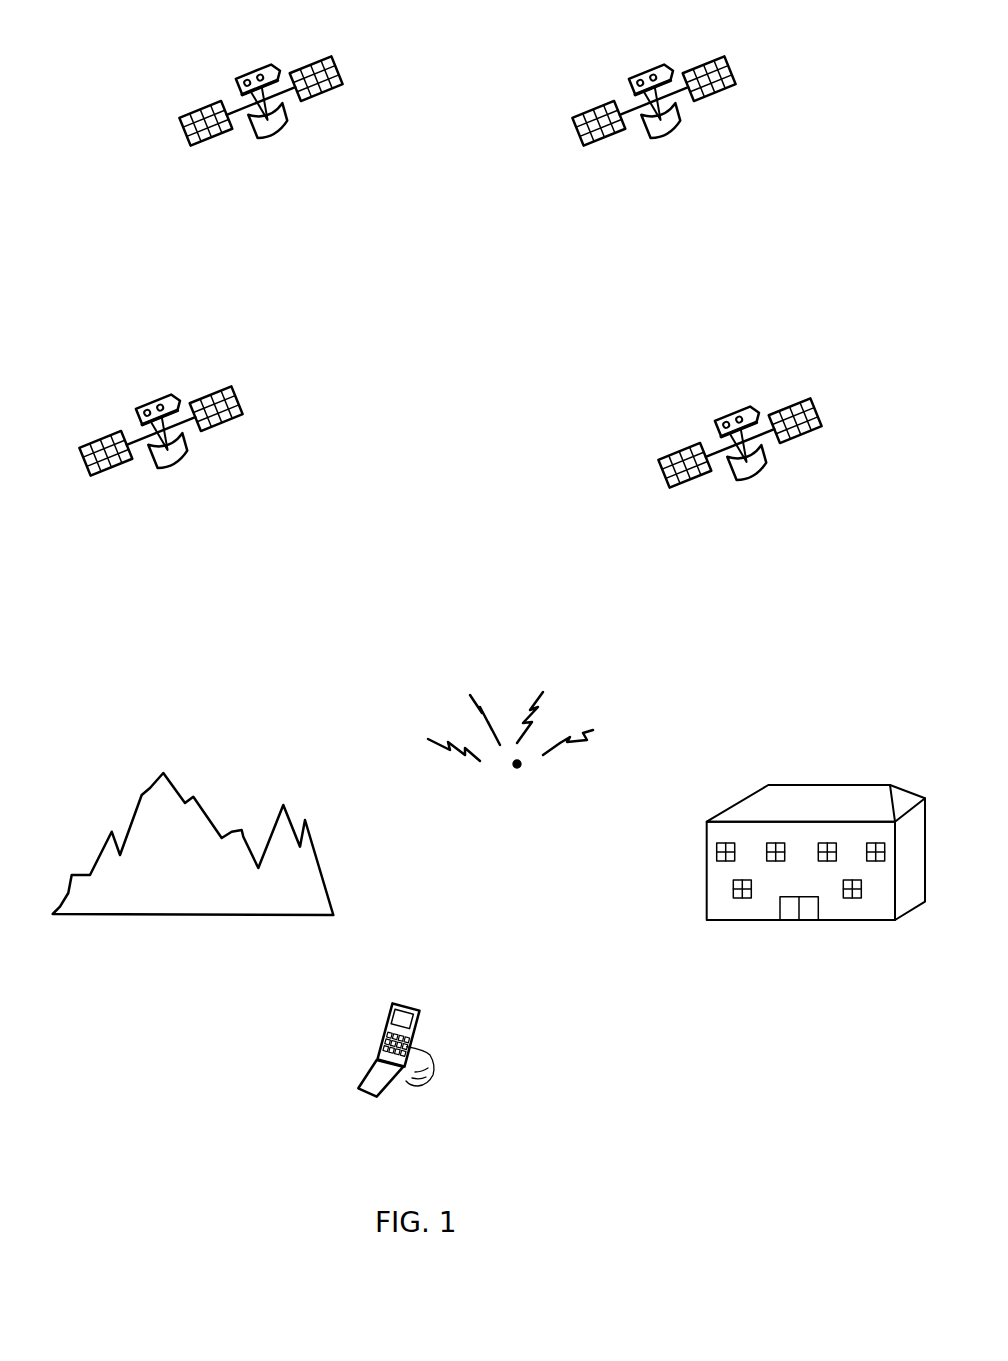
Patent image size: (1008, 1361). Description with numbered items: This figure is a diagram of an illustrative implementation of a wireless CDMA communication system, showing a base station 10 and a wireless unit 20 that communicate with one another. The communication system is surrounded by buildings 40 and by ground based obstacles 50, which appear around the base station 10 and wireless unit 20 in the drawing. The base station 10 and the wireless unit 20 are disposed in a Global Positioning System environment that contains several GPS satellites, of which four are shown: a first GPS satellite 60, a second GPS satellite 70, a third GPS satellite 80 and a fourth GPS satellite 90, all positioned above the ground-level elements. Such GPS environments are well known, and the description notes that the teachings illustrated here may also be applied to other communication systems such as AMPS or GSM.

The base station 10 is at (582, 731).
The wireless unit 20 is at (415, 1007).
The buildings 40 is at (822, 785).
The ground based obstacles 50 is at (318, 853).
The GPS satellite 60 is at (218, 387).
The GPS satellite 70 is at (315, 58).
The GPS satellite 80 is at (715, 58).
The GPS satellite 90 is at (802, 398).